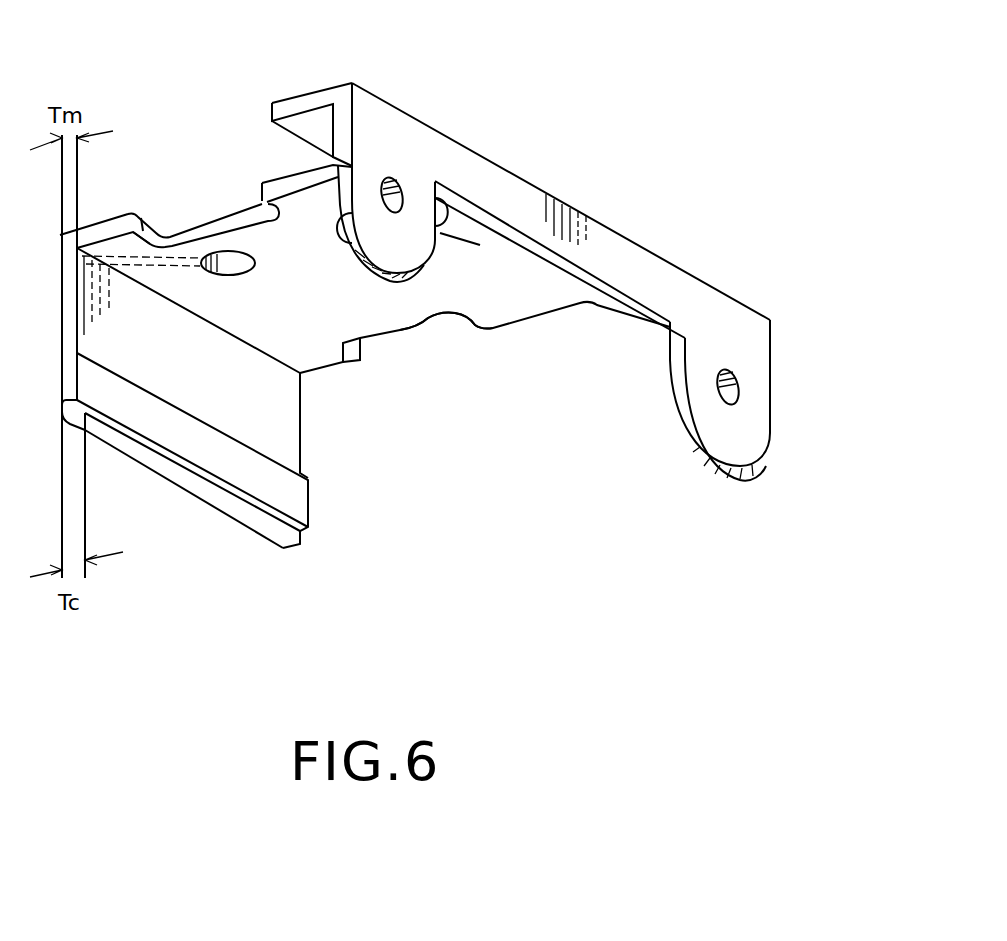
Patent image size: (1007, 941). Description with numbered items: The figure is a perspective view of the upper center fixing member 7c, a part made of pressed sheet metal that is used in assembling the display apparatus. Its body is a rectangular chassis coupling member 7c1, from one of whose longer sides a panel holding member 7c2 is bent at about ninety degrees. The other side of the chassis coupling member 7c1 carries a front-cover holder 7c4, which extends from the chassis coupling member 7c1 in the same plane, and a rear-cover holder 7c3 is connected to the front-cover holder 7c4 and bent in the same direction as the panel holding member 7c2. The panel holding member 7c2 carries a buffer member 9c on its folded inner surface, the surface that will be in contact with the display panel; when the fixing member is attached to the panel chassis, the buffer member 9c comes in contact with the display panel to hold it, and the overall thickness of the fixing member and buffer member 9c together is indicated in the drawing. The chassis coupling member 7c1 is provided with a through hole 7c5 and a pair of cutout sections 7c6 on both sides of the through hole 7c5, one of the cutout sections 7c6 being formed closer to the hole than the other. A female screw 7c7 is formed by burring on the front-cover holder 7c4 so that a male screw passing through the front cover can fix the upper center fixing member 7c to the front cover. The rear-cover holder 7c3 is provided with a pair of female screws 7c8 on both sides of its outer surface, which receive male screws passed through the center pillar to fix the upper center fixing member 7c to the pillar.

The upper center fixing member 7c is at (607, 227).
The chassis coupling member 7c1 is at (307, 320).
The panel holding member 7c2 is at (283, 430).
The rear-cover holder 7c3 is at (670, 292).
The front-cover holder 7c4 is at (316, 128).
The through hole 7c5 is at (230, 265).
The cutout sections 7c6 is at (223, 228).
The female screw 7c7 is at (457, 242).
The female screws 7c8 is at (395, 200).
The buffer member 9c is at (295, 497).